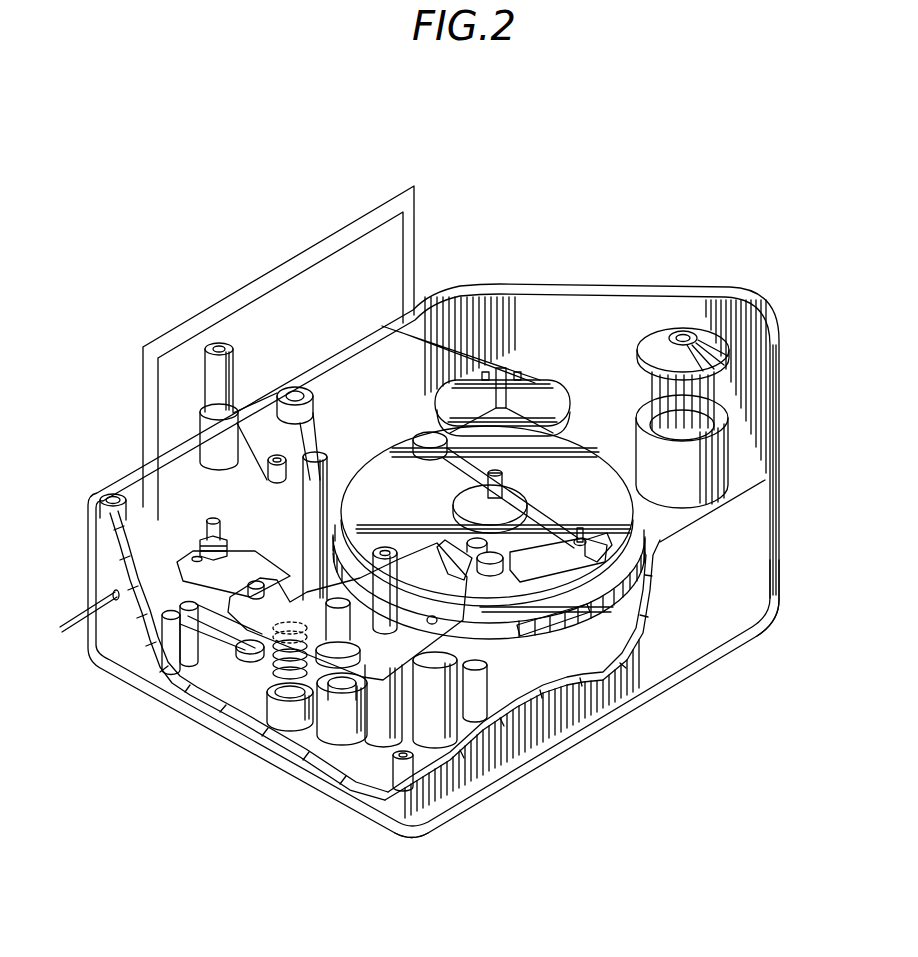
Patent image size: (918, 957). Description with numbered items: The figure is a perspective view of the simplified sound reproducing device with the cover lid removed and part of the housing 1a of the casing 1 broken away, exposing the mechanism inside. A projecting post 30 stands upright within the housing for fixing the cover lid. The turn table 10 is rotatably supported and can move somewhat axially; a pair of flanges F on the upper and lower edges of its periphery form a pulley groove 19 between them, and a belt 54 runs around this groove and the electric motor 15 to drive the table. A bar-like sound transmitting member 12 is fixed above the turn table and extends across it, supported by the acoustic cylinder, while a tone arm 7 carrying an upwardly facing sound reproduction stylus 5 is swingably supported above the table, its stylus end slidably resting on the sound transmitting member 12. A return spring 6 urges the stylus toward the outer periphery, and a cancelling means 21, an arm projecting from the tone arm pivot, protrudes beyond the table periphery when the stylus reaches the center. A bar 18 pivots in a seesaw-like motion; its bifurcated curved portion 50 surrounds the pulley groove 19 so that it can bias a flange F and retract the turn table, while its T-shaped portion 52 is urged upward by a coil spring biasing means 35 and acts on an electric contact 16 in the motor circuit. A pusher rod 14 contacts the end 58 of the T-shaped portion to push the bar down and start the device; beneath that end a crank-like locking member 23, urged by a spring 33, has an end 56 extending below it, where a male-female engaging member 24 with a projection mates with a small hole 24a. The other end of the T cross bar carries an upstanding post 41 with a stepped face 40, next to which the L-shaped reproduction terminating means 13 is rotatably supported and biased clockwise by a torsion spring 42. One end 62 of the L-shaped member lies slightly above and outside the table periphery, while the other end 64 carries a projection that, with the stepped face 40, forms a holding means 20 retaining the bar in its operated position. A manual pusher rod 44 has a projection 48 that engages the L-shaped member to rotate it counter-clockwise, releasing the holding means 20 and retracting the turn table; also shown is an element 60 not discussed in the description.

The casing 1 is at (722, 290).
The housing 1a is at (140, 688).
The sound reproduction stylus 5 is at (753, 630).
The return spring 6 is at (527, 630).
The tone arm 7 is at (603, 577).
The turn table 10 is at (623, 500).
The sound transmitting member 12 is at (565, 548).
The reproduction terminating means 13 is at (467, 720).
The pusher rod 14 is at (205, 420).
The electric motor 15 is at (548, 380).
The electric contact 16 is at (220, 692).
The bar 18 is at (335, 480).
The pulley groove 19 is at (627, 560).
The holding means 20 is at (338, 660).
The cancelling means 21 is at (380, 433).
The locking member 23 is at (275, 420).
The male-female engaging member 24 is at (185, 562).
The small hole 24a is at (187, 553).
The projecting post 30 is at (715, 390).
The spring 33 is at (203, 537).
The biasing means 35 is at (288, 690).
The stepped face 40 is at (390, 723).
The upstanding post 41 is at (328, 665).
The torsion spring 42 is at (485, 693).
The manual pusher rod 44 is at (382, 550).
The projection 48 is at (410, 568).
The bifurcated curved portion 50 is at (547, 620).
The T-shaped portion 52 is at (267, 653).
The belt 54 is at (455, 410).
The end of locking member 56 is at (230, 553).
The end of T-end 58 is at (173, 567).
The pin 60 is at (343, 707).
The end of L-shaped member 62 is at (470, 625).
The other end of L-shaped member 64 is at (408, 760).
The flange F is at (666, 535).